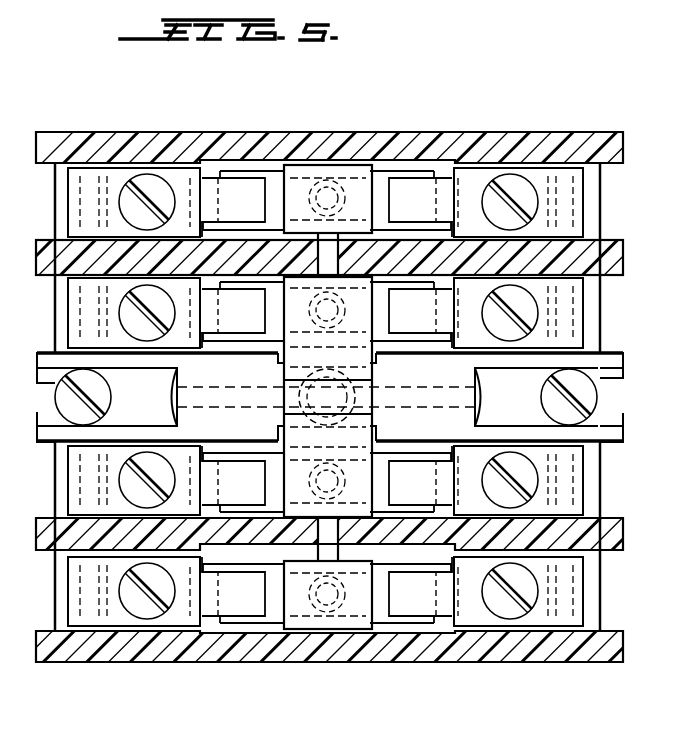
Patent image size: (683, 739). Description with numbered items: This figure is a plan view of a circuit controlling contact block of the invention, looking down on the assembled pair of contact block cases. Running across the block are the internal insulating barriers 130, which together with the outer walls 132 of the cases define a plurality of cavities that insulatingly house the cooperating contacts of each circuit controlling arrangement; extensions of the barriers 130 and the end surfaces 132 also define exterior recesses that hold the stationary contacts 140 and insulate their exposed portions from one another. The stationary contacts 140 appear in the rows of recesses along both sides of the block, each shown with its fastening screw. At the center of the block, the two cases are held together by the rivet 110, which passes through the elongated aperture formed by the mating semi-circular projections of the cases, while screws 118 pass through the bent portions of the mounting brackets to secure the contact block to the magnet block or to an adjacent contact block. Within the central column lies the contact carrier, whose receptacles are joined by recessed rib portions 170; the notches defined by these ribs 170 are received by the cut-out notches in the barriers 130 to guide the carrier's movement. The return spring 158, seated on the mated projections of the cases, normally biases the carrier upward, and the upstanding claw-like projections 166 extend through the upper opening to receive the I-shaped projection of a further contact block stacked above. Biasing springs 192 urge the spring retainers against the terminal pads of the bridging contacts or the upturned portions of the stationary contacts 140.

The rivet 110 is at (168, 398).
The screws 118 is at (53, 397).
The internal insulating barriers 130 is at (610, 261).
The outer walls 132 is at (520, 115).
The stationary contacts 140 is at (575, 204).
The return spring 158 is at (383, 382).
The claw-like projections 166 is at (280, 362).
The recessed rib portions 170 is at (345, 262).
The biasing springs 192 is at (330, 176).